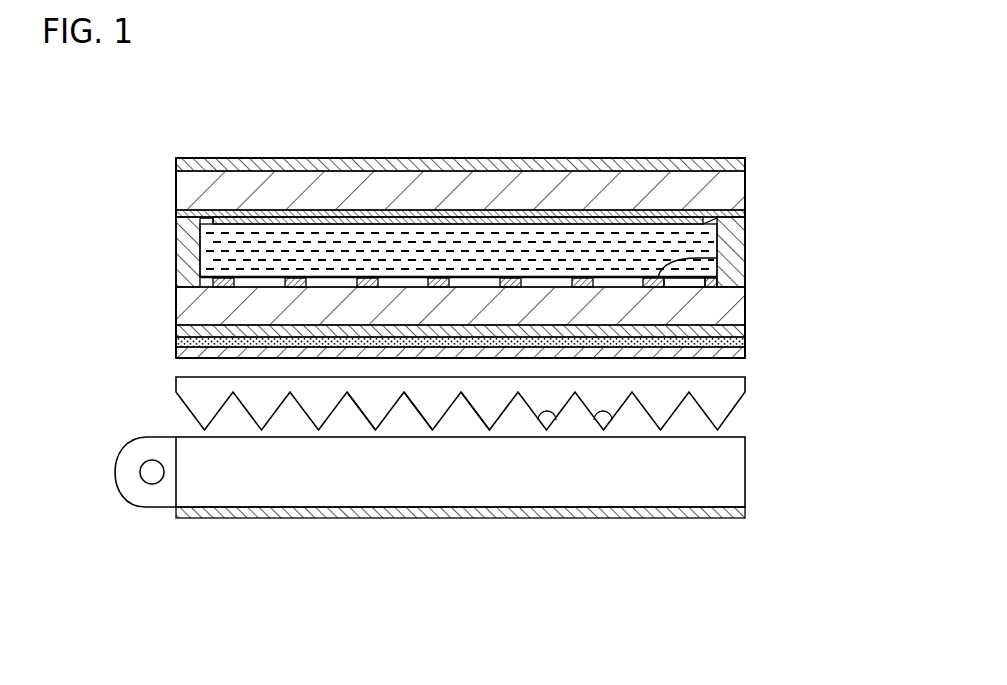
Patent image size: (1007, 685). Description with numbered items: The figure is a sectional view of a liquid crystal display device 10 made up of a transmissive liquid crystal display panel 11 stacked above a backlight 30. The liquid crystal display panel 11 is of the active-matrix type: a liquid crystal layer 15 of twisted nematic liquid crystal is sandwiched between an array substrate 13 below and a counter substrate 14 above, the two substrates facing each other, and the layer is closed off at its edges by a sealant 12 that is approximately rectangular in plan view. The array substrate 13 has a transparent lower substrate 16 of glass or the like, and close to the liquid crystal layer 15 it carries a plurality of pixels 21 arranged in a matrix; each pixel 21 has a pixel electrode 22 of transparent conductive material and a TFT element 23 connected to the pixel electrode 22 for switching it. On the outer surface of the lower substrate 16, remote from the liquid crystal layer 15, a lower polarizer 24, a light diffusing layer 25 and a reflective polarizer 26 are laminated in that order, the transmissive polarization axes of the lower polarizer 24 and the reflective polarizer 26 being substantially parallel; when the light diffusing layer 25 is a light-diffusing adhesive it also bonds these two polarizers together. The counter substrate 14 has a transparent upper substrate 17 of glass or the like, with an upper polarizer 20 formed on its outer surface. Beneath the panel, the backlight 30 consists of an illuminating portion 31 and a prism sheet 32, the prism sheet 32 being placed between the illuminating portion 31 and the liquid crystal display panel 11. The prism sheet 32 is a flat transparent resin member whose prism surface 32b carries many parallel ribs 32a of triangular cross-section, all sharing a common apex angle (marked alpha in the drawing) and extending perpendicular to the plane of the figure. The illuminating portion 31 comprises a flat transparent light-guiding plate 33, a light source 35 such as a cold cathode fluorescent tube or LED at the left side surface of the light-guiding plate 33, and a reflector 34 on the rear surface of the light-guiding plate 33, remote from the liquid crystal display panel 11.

The liquid crystal display device 10 is at (674, 146).
The liquid crystal display panel 11 is at (115, 175).
The sealant 12 is at (184, 267).
The array substrate 13 is at (174, 287).
The counter substrate 14 is at (174, 158).
The liquid crystal layer 15 is at (209, 242).
The lower substrate 16 is at (735, 300).
The upper substrate 17 is at (735, 187).
The upper polarizer 20 is at (745, 163).
The pixel 21 is at (722, 236).
The pixel electrode 22 is at (740, 281).
The TFT element 23 is at (745, 268).
The lower polarizer 24 is at (712, 216).
The light diffusing layer 25 is at (745, 340).
The reflective polarizer 26 is at (745, 353).
The backlight 30 is at (815, 417).
The illuminating portion 31 is at (738, 457).
The prism sheet 32 is at (735, 385).
The rib 32a is at (370, 400).
The prism surface 32b is at (419, 409).
The light-guiding plate 33 is at (653, 487).
The reflector 34 is at (713, 518).
The light source 35 is at (138, 478).